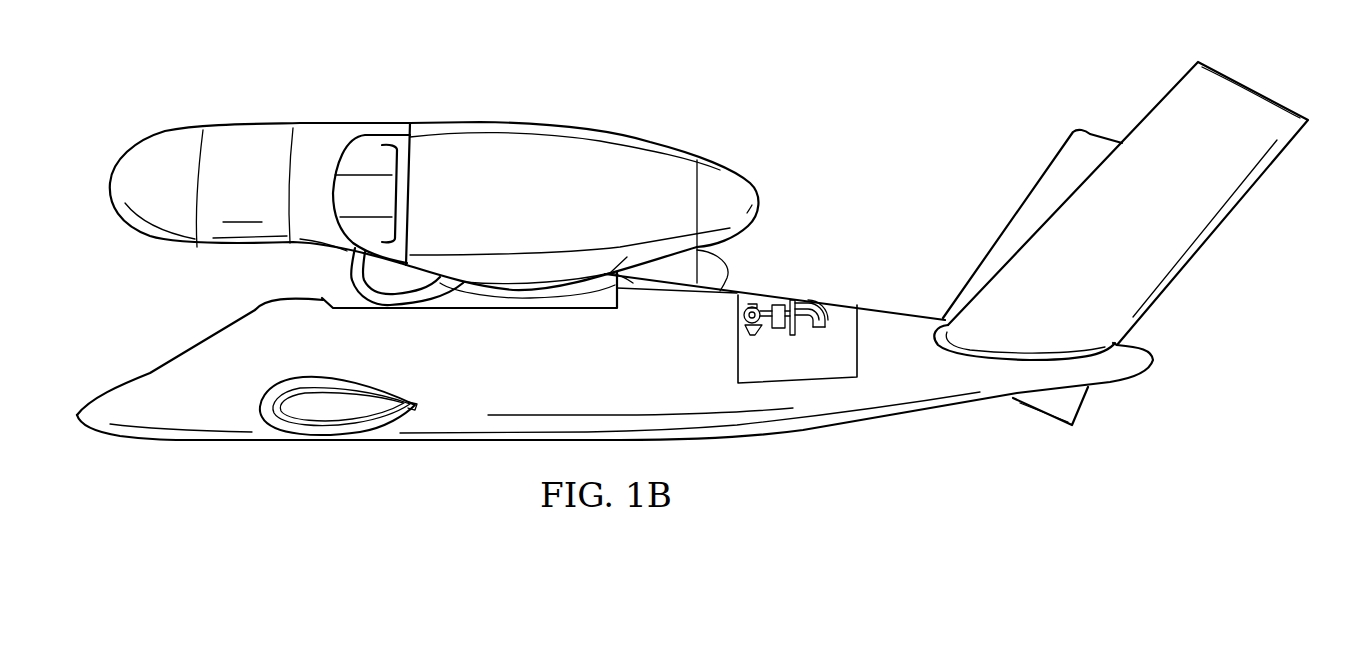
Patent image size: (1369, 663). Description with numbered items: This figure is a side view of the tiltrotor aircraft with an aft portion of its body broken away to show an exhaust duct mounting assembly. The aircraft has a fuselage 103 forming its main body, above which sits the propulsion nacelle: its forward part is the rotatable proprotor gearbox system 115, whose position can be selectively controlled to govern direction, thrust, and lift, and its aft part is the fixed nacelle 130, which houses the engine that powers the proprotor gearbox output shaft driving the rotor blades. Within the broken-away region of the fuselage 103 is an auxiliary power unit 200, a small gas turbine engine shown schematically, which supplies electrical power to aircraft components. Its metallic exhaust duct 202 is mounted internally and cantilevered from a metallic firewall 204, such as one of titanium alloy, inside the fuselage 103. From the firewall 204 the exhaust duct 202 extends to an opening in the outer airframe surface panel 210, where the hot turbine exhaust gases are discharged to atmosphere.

The fuselage 103 is at (198, 442).
The rotatable proprotor gearbox system 115 is at (241, 126).
The fixed nacelle 130 is at (586, 129).
The auxiliary power unit 200 is at (785, 309).
The exhaust duct 202 is at (807, 302).
The firewall 204 is at (792, 297).
The outer airframe surface panel 210 is at (842, 298).